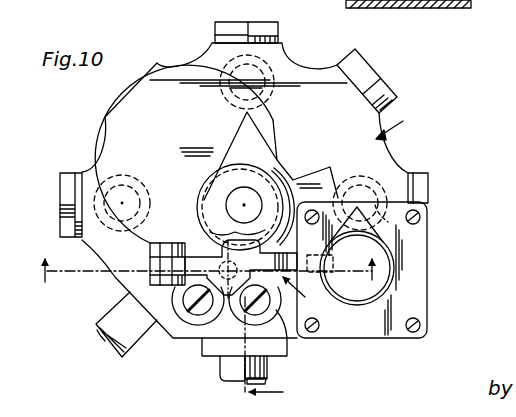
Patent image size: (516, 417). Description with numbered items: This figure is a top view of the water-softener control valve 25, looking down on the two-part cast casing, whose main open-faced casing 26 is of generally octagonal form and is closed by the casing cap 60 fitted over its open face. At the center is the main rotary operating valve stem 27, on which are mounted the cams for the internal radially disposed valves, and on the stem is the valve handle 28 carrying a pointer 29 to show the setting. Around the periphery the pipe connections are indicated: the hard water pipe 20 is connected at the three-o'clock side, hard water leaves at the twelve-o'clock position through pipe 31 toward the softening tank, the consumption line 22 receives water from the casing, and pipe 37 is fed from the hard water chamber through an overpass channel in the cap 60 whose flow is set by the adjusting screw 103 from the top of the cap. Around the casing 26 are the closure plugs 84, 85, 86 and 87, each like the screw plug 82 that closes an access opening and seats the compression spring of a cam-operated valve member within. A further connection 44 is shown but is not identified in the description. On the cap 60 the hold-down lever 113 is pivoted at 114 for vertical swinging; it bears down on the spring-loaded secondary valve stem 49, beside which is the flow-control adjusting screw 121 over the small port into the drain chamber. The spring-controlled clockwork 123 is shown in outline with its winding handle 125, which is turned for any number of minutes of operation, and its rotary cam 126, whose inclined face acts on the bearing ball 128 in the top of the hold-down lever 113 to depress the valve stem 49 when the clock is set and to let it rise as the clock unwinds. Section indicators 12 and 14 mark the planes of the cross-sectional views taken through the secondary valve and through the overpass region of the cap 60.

The valve 25 is at (174, 61).
The closure plug 85 is at (253, 30).
The screw plug 82 is at (425, 9).
The pipe 31 is at (272, 66).
The closure plug 86 is at (383, 92).
The casing cap 60 is at (399, 128).
The hard water pipe 20 is at (381, 183).
The closure plug 87 is at (419, 173).
The closure plug 84 is at (66, 174).
The consumption line 22 is at (122, 180).
The valve handle 28 is at (267, 183).
The valve stem 27 is at (240, 204).
The pointer 29 is at (252, 133).
The hold-down lever 113 is at (200, 257).
The pivot 114 is at (150, 250).
The valve stem 49 is at (229, 311).
The flow-control adjusting screw 121 is at (198, 309).
The adjusting screw 103 is at (287, 339).
The pipe 37 is at (227, 371).
The casing 26 is at (278, 362).
The angled pipe 44 is at (110, 328).
The clockwork 123 is at (418, 290).
The winding handle 125 is at (388, 265).
The bearing ball 128 is at (333, 258).
The rotary cam 126 is at (390, 247).
The section line 12 is at (204, 283).
The section line 14 is at (284, 340).